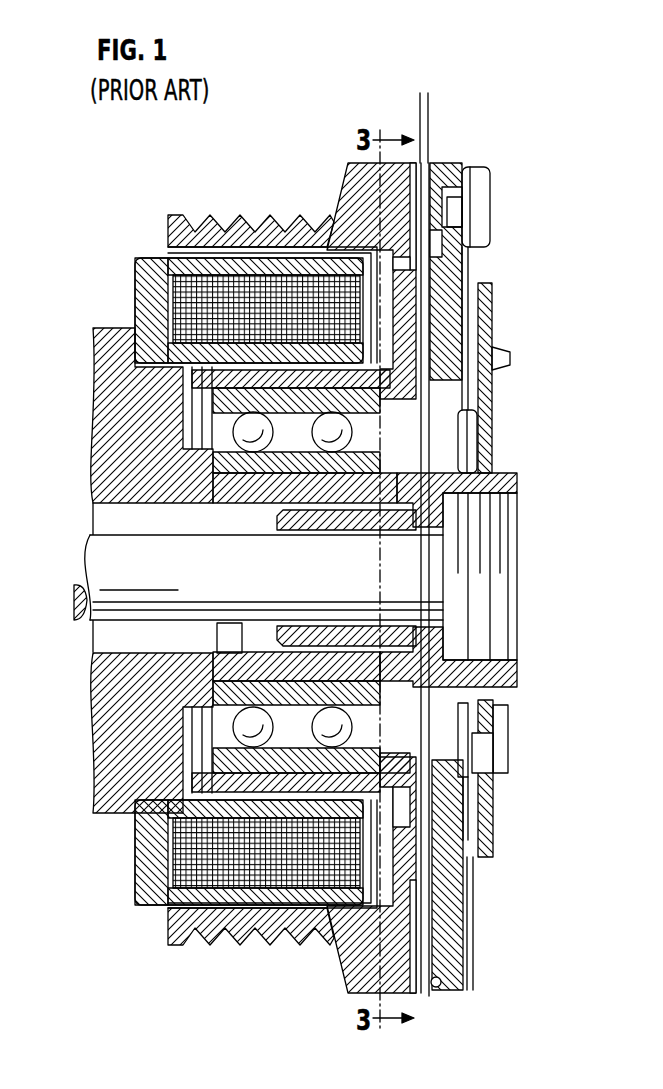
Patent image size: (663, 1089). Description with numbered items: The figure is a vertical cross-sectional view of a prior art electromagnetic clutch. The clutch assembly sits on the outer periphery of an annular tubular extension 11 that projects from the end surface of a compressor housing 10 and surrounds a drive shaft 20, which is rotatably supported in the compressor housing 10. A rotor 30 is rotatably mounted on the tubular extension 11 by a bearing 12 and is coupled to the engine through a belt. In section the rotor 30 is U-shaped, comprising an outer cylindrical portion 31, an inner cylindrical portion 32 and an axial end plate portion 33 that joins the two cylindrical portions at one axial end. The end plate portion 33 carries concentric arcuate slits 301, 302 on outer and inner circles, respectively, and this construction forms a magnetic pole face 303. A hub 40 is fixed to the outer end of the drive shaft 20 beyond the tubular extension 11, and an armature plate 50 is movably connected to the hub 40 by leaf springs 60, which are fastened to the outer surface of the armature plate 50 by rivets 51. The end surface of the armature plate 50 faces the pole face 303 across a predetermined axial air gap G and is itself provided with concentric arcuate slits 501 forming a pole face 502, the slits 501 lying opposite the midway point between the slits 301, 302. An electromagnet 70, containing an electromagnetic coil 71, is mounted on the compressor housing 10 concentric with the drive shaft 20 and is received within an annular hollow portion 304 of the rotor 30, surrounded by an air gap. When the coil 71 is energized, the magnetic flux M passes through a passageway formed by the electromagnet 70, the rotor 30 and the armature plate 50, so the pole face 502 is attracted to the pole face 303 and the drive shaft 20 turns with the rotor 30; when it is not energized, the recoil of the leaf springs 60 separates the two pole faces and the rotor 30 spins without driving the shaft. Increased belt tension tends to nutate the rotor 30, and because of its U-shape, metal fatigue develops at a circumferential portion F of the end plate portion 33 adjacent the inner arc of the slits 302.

The compressor housing 10 is at (95, 790).
The annular tubular extension 11 is at (250, 655).
The bearing 12 is at (217, 728).
The drive shaft 20 is at (80, 572).
The rotor 30 is at (292, 593).
The arcuate slits 301 is at (372, 255).
The arcuate slits 302 is at (447, 330).
The magnetic pole face 303 is at (436, 988).
The annular hollow portion 304 is at (345, 935).
The outer cylindrical portion 31 is at (243, 947).
The inner cylindrical portion 32 is at (380, 748).
The axial end plate portion 33 is at (463, 910).
The hub 40 is at (498, 490).
The armature plate 50 is at (459, 908).
The concentric arcuate slits 501 is at (463, 860).
The pole face 502 is at (497, 787).
The rivets 51 is at (483, 200).
The leaf springs 60 is at (468, 263).
The electromagnet 70 is at (147, 905).
The electromagnetic coil 71 is at (173, 865).
The magnetic flux M is at (251, 216).
The circumferential portion F is at (480, 432).
The axial air gap G is at (393, 104).